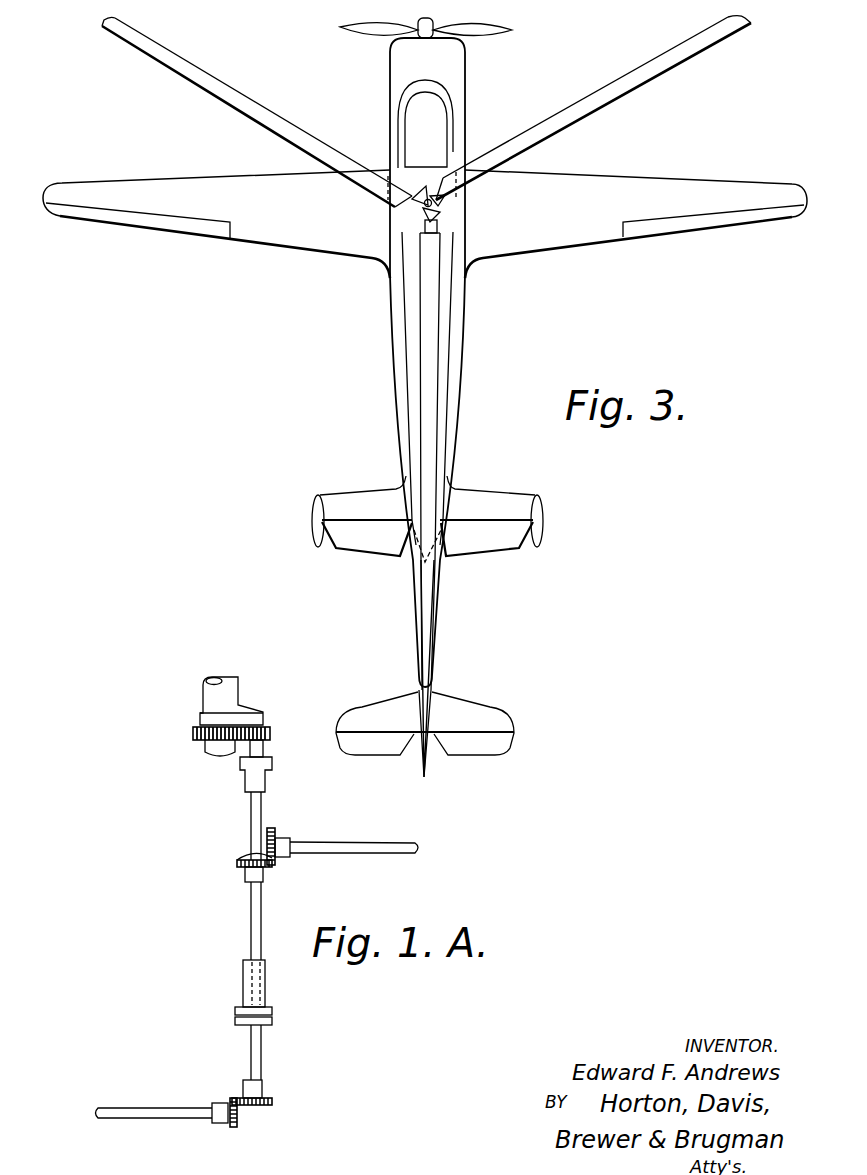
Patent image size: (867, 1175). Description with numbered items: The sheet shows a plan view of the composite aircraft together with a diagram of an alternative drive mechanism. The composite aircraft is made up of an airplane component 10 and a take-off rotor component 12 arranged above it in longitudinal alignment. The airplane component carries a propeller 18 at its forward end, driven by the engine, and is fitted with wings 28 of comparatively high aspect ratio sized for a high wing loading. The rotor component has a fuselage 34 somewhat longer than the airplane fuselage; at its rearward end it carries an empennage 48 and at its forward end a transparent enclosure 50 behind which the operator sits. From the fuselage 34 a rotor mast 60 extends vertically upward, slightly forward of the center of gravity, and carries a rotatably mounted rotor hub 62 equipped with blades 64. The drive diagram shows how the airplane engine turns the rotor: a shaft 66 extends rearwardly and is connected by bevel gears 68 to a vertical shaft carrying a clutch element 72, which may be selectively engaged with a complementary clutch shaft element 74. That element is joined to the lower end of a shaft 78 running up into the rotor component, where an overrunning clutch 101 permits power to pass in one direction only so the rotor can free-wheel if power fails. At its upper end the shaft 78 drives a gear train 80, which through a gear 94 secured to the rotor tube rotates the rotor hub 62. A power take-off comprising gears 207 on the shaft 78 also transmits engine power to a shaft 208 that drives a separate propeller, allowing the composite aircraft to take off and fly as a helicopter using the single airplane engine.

In FIG. 3, the airplane component 10 is at (467, 368).
In FIG. 3, the take-off rotor component 12 is at (457, 287).
In FIG. 3, the propeller 18 is at (340, 30).
In FIG. 3, the wings 28 is at (267, 235).
In FIG. 3, the fuselage 34 is at (415, 332).
In FIG. 3, the empennage 48 is at (472, 722).
In FIG. 3, the transparent enclosure 50 is at (420, 122).
In FIG. 3, the rotor hub 62 is at (450, 223).
In FIG. 3, the blades 64 is at (593, 108).
In FIG. 1A, the rotor mast 60 is at (240, 690).
In FIG. 1A, the gear train 80 is at (270, 733).
In FIG. 1A, the gear 94 is at (195, 738).
In FIG. 1A, the overrunning clutch 101 is at (272, 770).
In FIG. 1A, the shaft 78 is at (262, 805).
In FIG. 1A, the gears 207 is at (240, 860).
In FIG. 1A, the shaft 208 is at (360, 843).
In FIG. 1A, the clutch shaft element 74 is at (246, 960).
In FIG. 1A, the clutch element 72 is at (243, 985).
In FIG. 1A, the bevel gears 68 is at (240, 1112).
In FIG. 1A, the shaft 66 is at (147, 1120).